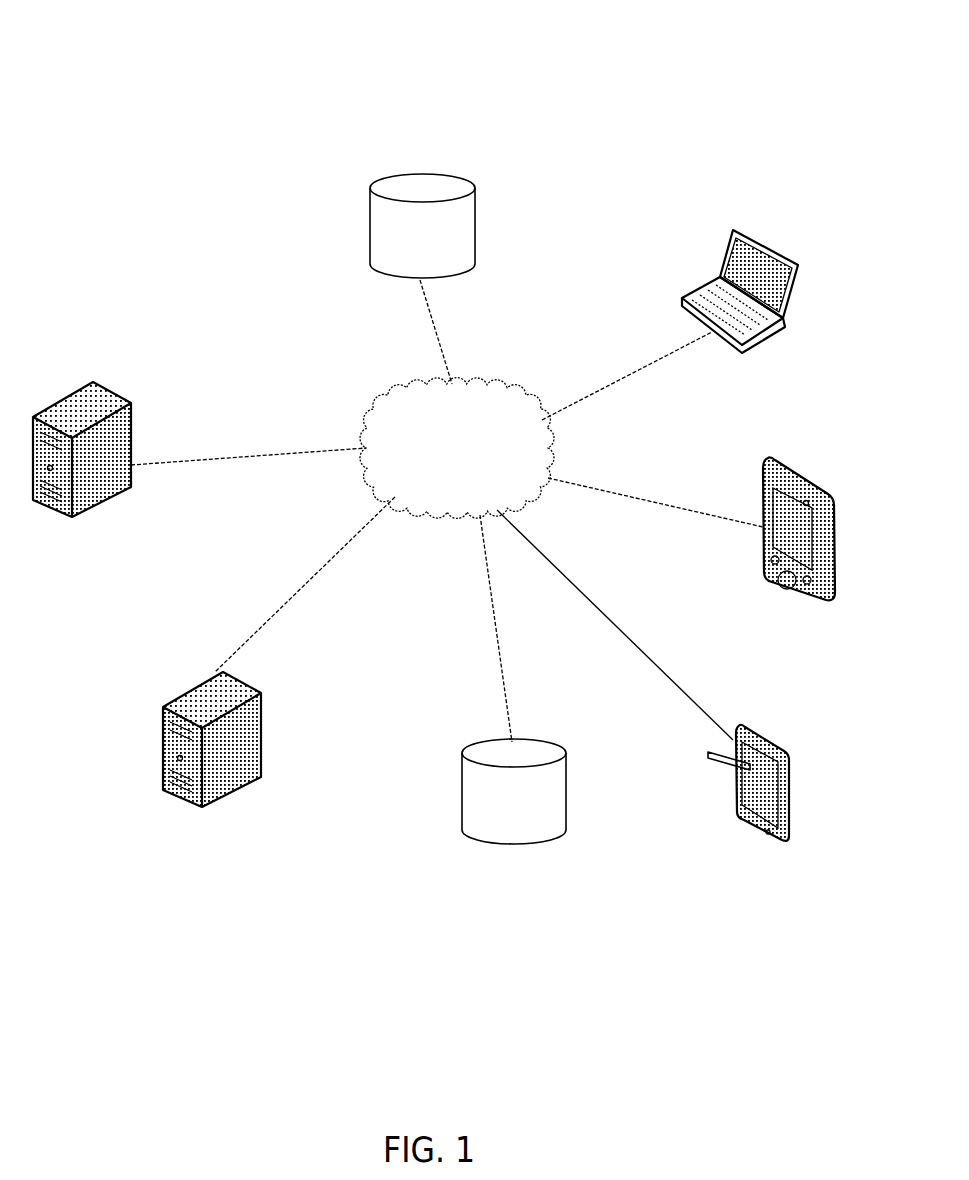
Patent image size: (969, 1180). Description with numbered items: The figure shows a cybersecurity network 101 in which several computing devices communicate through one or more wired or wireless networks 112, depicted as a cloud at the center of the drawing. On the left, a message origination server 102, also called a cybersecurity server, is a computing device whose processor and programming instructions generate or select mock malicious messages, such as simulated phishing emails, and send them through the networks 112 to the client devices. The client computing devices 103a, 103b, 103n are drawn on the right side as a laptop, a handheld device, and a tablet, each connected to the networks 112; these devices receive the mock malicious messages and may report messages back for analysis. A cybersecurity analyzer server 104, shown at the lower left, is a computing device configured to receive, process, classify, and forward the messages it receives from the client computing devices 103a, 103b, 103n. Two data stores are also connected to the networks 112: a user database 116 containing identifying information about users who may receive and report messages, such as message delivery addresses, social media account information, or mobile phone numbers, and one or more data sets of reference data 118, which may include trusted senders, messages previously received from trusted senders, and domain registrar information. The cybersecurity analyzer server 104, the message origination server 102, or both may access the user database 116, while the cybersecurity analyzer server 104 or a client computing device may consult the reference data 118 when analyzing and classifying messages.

The cybersecurity network 101 is at (250, 78).
The message origination server 102 is at (82, 383).
The client computing device 103a is at (800, 283).
The client computing device 103b is at (838, 515).
The client computing device 103n is at (790, 778).
The cybersecurity analyzer server 104 is at (198, 810).
The wired or wireless networks 112 is at (456, 515).
The user database 116 is at (412, 170).
The reference data 118 is at (540, 845).